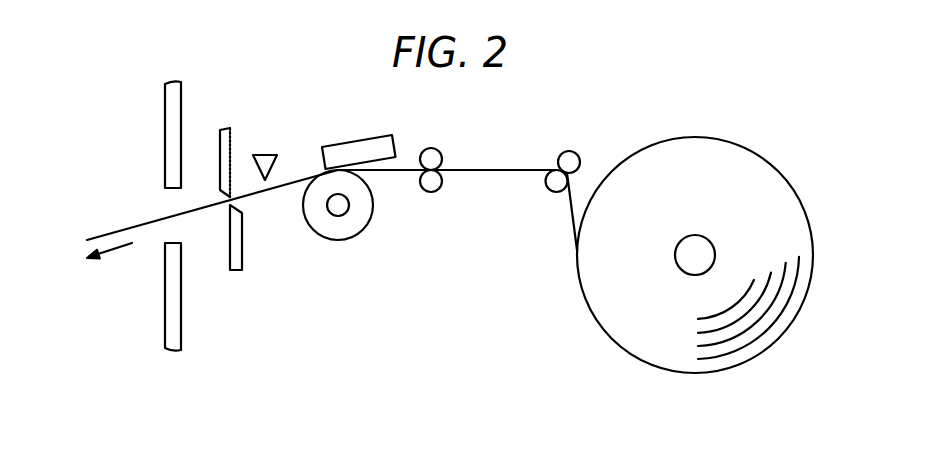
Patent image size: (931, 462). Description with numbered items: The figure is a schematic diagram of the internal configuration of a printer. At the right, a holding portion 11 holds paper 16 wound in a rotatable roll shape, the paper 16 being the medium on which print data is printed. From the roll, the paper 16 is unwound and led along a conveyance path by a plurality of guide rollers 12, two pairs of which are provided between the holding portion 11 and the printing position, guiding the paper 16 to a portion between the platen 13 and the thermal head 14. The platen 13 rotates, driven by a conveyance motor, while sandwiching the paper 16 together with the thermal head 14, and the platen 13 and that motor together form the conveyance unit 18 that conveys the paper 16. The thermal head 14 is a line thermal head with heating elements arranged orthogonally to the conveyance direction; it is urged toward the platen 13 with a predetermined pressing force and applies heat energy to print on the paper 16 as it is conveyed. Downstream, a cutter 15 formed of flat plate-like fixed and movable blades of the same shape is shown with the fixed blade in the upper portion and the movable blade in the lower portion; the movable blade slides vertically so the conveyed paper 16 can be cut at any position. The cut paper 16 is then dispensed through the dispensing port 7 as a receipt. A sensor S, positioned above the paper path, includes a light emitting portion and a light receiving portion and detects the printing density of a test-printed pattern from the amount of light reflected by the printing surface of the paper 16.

The dispensing port 7 is at (170, 199).
The sensor S is at (265, 153).
The holding portion 11 is at (695, 243).
The guide rollers 12 is at (431, 147).
The platen 13 is at (335, 235).
The thermal head 14 is at (342, 140).
The cutter 15 is at (223, 213).
The paper 16 is at (647, 347).
The conveyance unit 18 is at (365, 198).